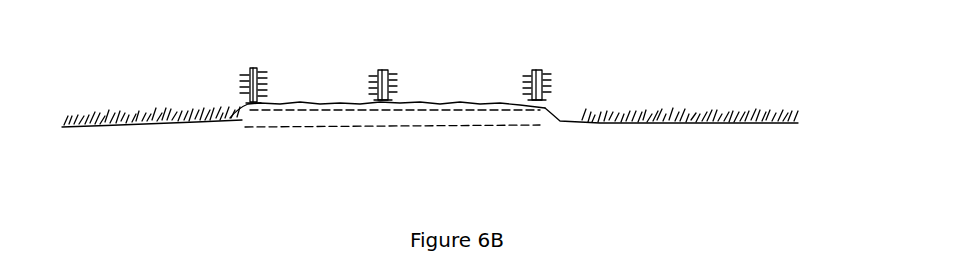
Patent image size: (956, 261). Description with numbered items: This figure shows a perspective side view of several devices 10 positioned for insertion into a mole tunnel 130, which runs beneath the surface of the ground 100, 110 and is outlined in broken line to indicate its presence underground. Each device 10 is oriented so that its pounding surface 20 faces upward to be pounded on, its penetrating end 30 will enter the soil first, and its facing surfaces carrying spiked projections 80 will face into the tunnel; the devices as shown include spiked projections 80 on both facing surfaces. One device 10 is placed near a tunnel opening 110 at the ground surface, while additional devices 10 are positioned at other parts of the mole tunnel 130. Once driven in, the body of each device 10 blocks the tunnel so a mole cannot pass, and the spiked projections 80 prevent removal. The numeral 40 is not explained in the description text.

The device 10 is at (264, 60).
The pounding surface 20 is at (402, 102).
The penetrating end 30 is at (256, 100).
The bristles (left side) 40 is at (240, 92).
The spiked projections 80 is at (261, 85).
The surface of the ground 100 is at (558, 119).
The tunnel opening 110 is at (240, 117).
The mole tunnel 130 is at (533, 120).